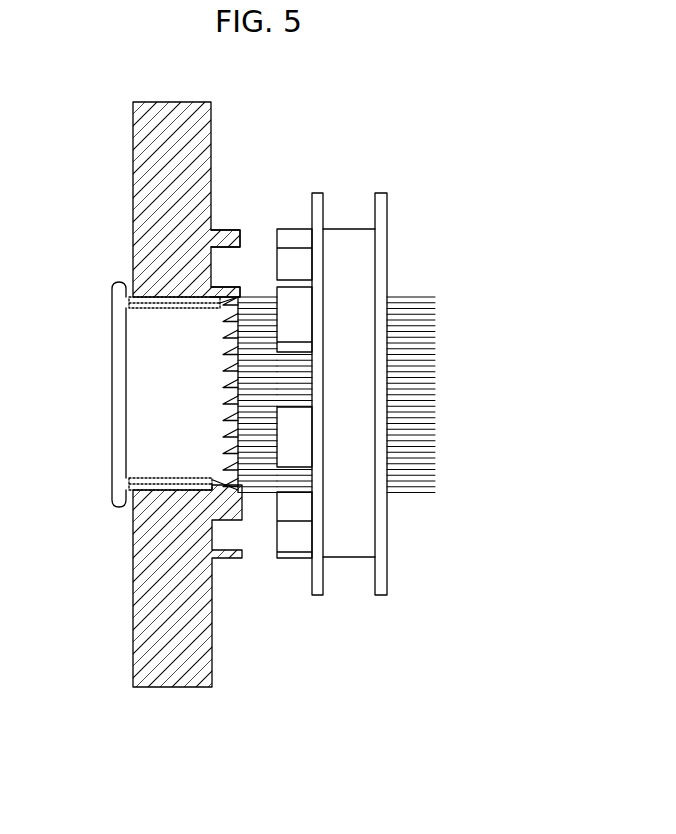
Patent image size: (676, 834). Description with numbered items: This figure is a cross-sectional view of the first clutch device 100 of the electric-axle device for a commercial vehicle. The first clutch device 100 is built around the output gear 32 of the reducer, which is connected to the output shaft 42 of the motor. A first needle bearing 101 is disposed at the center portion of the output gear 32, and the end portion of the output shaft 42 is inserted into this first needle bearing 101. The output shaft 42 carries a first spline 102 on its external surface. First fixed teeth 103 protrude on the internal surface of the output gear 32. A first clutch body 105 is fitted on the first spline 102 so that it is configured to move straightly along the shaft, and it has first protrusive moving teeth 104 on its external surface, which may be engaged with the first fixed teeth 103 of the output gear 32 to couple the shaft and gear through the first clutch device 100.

The output gear 32 is at (148, 625).
The output shaft 42 is at (412, 298).
The first clutch device 100 is at (361, 366).
The first needle bearing 101 is at (152, 298).
The first spline 102 is at (257, 308).
The first fixed teeth 103 is at (228, 253).
The first protrusive moving teeth 104 is at (298, 255).
The first clutch body 105 is at (350, 550).